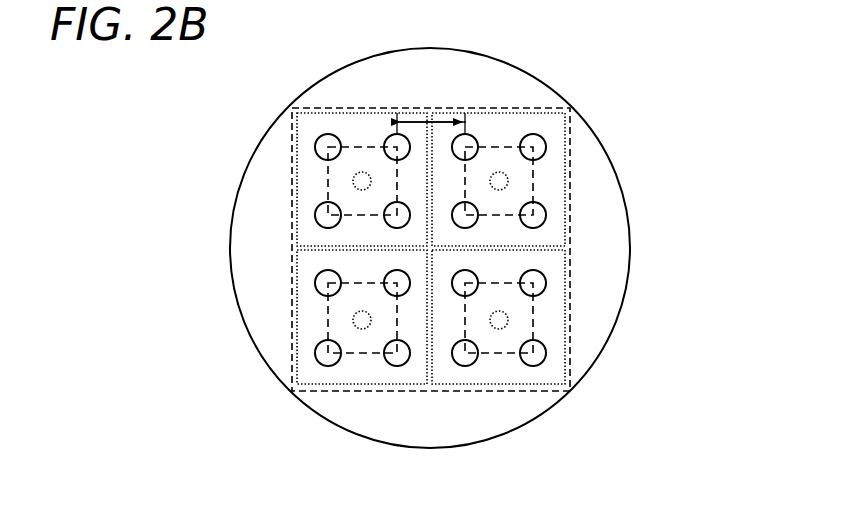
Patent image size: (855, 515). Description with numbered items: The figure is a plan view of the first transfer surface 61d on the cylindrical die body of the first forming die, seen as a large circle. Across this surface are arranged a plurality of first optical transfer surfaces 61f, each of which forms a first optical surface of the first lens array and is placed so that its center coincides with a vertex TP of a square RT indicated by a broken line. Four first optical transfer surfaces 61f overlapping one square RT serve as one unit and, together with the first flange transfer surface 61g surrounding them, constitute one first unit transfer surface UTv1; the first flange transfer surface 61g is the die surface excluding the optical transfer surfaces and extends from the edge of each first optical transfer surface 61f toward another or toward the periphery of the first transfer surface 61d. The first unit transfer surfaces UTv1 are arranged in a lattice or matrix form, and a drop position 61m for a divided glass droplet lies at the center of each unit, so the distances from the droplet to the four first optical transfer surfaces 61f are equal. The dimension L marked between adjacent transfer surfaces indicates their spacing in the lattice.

The first transfer surface 61d is at (630, 204).
The first optical transfer surface 61f is at (324, 141).
The first flange transfer surface 61g is at (315, 197).
The drop position 61m is at (353, 177).
The square RT is at (325, 186).
The vertex TP is at (470, 142).
The first unit transfer surface UTv1 is at (340, 111).
The pitch L is at (442, 113).